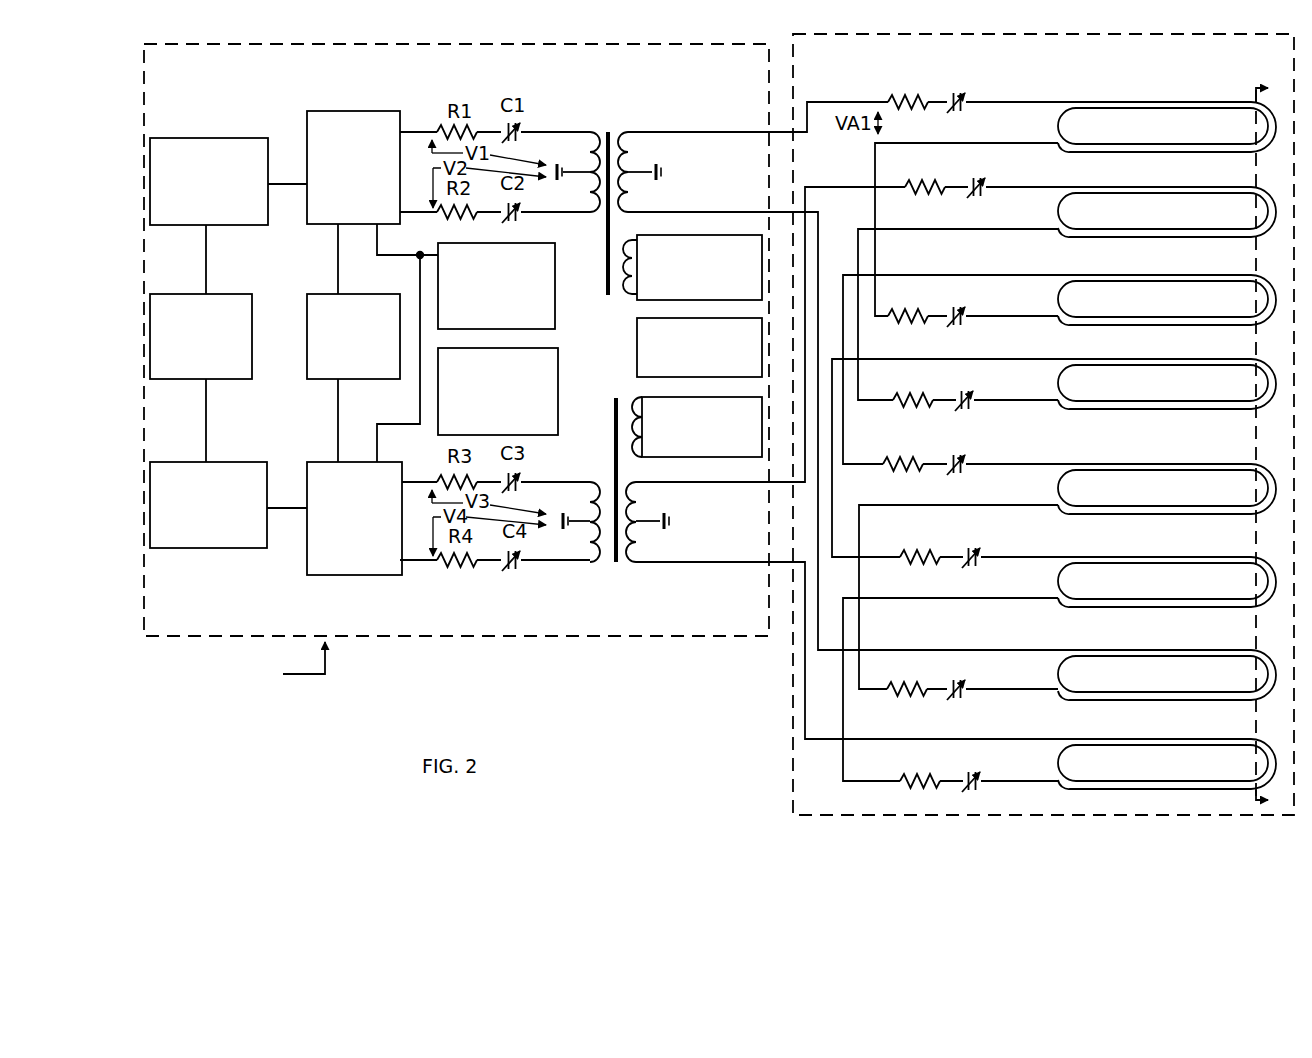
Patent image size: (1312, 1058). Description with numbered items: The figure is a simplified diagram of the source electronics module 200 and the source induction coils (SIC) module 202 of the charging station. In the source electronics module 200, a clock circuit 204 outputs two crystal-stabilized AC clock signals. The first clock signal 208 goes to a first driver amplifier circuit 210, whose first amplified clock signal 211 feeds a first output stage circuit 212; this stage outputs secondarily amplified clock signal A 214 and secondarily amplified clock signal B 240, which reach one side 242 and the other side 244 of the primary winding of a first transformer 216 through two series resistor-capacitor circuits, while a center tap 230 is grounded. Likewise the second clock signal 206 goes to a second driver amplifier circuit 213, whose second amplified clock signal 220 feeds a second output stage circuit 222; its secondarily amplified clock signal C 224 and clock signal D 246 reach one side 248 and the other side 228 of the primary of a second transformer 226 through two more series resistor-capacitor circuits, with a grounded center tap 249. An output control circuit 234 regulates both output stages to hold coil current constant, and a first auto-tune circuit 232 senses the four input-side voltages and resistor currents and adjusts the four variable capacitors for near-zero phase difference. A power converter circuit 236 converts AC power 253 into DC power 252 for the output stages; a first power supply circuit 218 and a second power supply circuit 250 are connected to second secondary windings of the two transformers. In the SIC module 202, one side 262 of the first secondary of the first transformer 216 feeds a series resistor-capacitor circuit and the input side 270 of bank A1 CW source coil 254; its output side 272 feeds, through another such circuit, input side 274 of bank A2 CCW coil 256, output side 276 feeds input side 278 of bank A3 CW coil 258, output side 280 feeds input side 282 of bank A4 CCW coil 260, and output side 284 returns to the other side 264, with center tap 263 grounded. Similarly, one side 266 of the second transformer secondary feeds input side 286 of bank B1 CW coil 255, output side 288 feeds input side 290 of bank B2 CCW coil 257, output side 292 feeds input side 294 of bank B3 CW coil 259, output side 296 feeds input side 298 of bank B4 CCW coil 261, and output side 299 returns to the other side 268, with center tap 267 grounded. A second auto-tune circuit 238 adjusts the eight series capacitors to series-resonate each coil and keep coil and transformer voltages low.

The source electronics module 200 is at (760, 71).
The SIC module 202 is at (1288, 58).
The clock circuit 204 is at (219, 330).
The second clock signal 206 is at (207, 440).
The first clock signal 208 is at (226, 262).
The first driver amplifier circuit 210 is at (227, 163).
The first amplified clock signal 211 is at (290, 178).
The first output stage circuit 212 is at (371, 143).
The second driver amplifier circuit 213 is at (226, 488).
The secondarily amplified clock signal A 214 is at (417, 128).
The first transformer 216 is at (608, 288).
The first power supply circuit 218 is at (756, 263).
The second amplified clock signal 220 is at (289, 504).
The second output stage circuit 222 is at (372, 496).
The secondarily amplified clock signal C 224 is at (431, 478).
The second transformer 226 is at (614, 407).
The other side of primary winding on second transformer 228 is at (556, 566).
The center tap on primary winding of first transformer 230 is at (584, 180).
The first auto-tune circuit 232 is at (516, 375).
The output control circuit 234 is at (371, 318).
The power converter circuit 236 is at (514, 268).
The second auto-tune circuit 238 is at (754, 369).
The secondarily amplified clock signal B 240 is at (430, 216).
The one side of primary winding on first transformer 242 is at (549, 127).
The other side of primary winding on first transformer 244 is at (549, 218).
The secondarily amplified clock signal D 246 is at (418, 562).
The one side of primary winding on second transformer 248 is at (557, 479).
The center tap on primary winding of second transformer 249 is at (592, 522).
The second power supply circuit 250 is at (758, 423).
The DC power supplied to output stages 252 is at (418, 404).
The AC power 253 is at (256, 669).
The bank A1 CW source coil 254 is at (1240, 136).
The bank B1 CW source coil 255 is at (1240, 221).
The bank A2 CCW source coil 256 is at (1248, 309).
The bank B2 CCW source coil 257 is at (1248, 393).
The bank A3 CW source coil 258 is at (1240, 498).
The bank B3 CW source coil 259 is at (1240, 591).
The bank A4 CCW source coil 260 is at (1248, 684).
The bank B4 CCW source coil 261 is at (1248, 773).
The one side of first secondary winding on first transformer 262 is at (637, 130).
The center tap on first secondary winding of first transformer 263 is at (640, 173).
The other side of first secondary winding on first transformer 264 is at (637, 212).
The one side of first secondary winding on second transformer 266 is at (648, 487).
The center tap on first secondary winding of second transformer 267 is at (649, 530).
The other side of first secondary winding on second transformer 268 is at (649, 567).
The input side of bank A1 CW source coil 270 is at (1000, 106).
The output side of bank A1 CW source coil 272 is at (999, 147).
The input side of bank A2 CCW source coil 274 is at (1000, 320).
The output side of bank A2 CCW source coil 276 is at (999, 279).
The input side of bank A3 CW source coil 278 is at (1000, 468).
The output side of bank A3 CW source coil 280 is at (999, 509).
The input side of bank A4 CCW source coil 282 is at (1000, 693).
The output side of bank A4 CCW source coil 284 is at (999, 654).
The input side of bank B1 CW source coil 286 is at (1011, 191).
The output side of bank B1 CW source coil 288 is at (997, 233).
The input side of bank B2 CCW source coil 290 is at (1011, 404).
The output side of bank B2 CCW source coil 292 is at (999, 363).
The input side of bank B3 CW source coil 294 is at (1011, 561).
The output side of bank B3 CW source coil 296 is at (999, 602).
The input side of bank B4 CCW source coil 298 is at (1011, 785).
The output side of bank B4 CCW source coil 299 is at (999, 743).